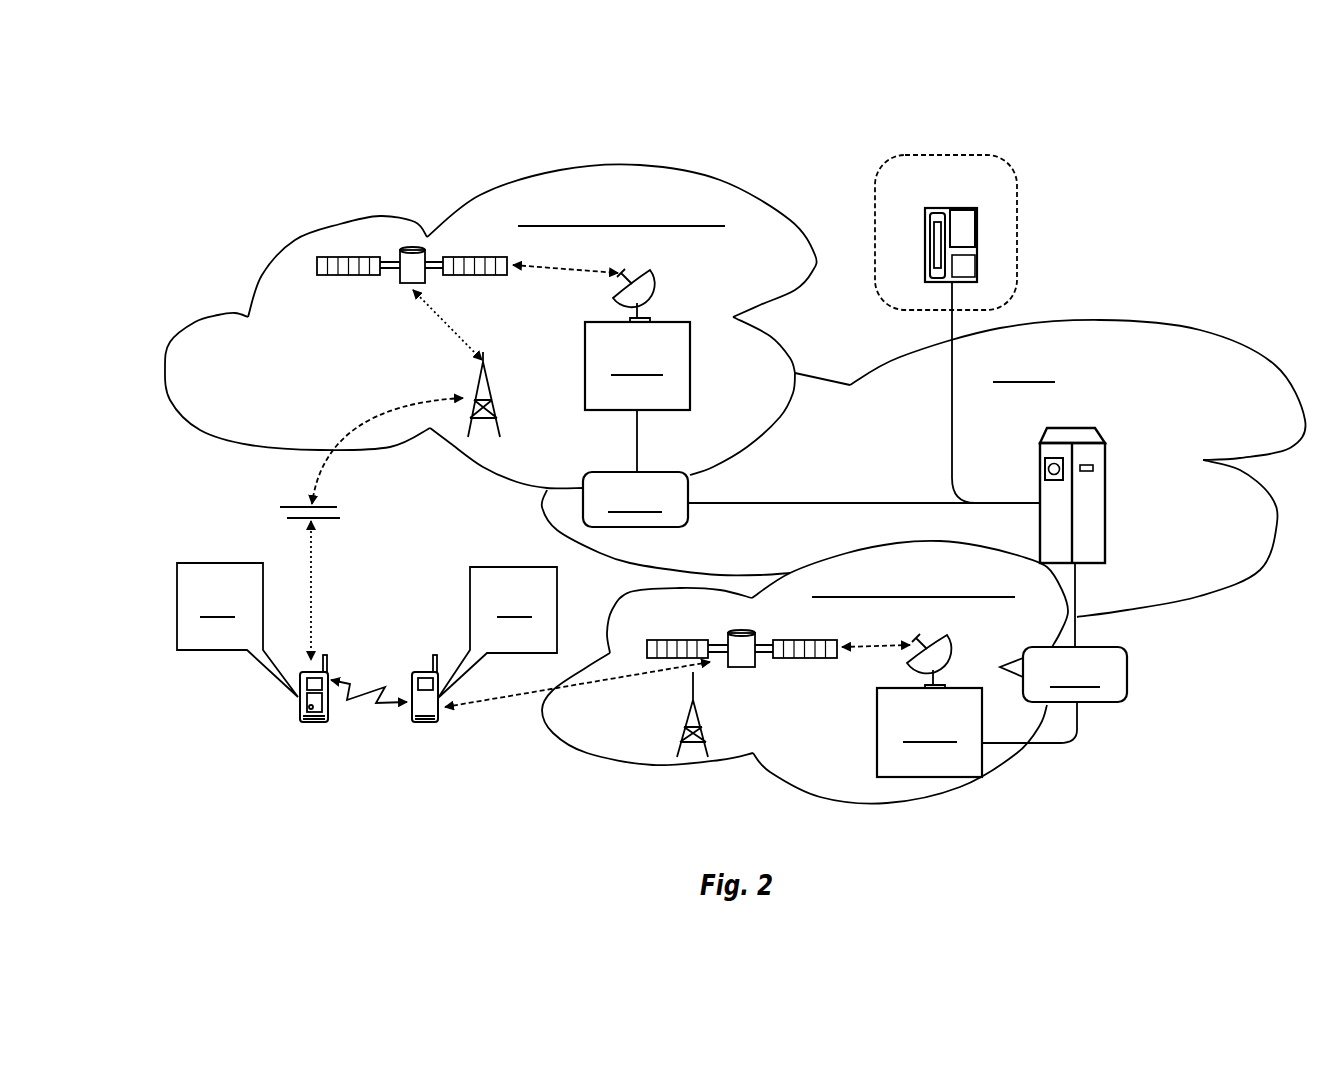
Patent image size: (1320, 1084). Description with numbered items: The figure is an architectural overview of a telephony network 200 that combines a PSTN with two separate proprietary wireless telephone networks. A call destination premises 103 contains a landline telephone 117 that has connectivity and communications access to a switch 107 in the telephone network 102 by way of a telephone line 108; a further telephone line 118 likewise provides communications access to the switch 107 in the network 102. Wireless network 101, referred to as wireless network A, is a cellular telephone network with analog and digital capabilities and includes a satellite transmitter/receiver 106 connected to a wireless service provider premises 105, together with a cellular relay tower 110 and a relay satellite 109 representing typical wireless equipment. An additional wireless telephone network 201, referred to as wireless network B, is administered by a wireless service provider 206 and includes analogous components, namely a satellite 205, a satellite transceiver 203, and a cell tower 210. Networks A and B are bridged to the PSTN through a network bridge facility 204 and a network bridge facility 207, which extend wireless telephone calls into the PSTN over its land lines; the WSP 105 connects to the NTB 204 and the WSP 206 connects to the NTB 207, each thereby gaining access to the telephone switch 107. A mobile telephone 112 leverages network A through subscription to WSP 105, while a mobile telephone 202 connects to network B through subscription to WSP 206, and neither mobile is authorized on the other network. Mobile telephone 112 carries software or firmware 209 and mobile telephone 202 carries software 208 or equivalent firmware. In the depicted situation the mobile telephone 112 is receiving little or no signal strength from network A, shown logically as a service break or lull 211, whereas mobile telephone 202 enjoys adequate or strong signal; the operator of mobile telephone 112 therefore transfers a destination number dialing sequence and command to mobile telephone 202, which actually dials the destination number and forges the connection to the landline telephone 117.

The wireless network 101 is at (218, 315).
The telephone network 102 is at (1112, 318).
The call destination premises 103 is at (873, 222).
The wireless service provider premises 105 is at (580, 372).
The satellite transmitter/receiver 106 is at (653, 287).
The switch 107 is at (1038, 488).
The telephone line 108 is at (952, 455).
The relay satellite 109 is at (400, 283).
The cellular relay tower 110 is at (493, 395).
The mobile telephone 112 is at (313, 720).
The landline telephone 117 is at (940, 208).
The telephone line 118 is at (1077, 597).
The telephony network 200 is at (1105, 185).
The wireless telephone network 201 is at (733, 760).
The mobile telephone 202 is at (422, 673).
The satellite transceiver 203 is at (948, 657).
The network bridge facility 204 is at (653, 472).
The satellite 205 is at (742, 670).
The wireless service provider 206 is at (877, 727).
The network bridge facility 207 is at (1102, 703).
The software 208 is at (468, 622).
The software 209 is at (225, 563).
The cell tower 210 is at (687, 738).
The service break or lull 211 is at (293, 507).